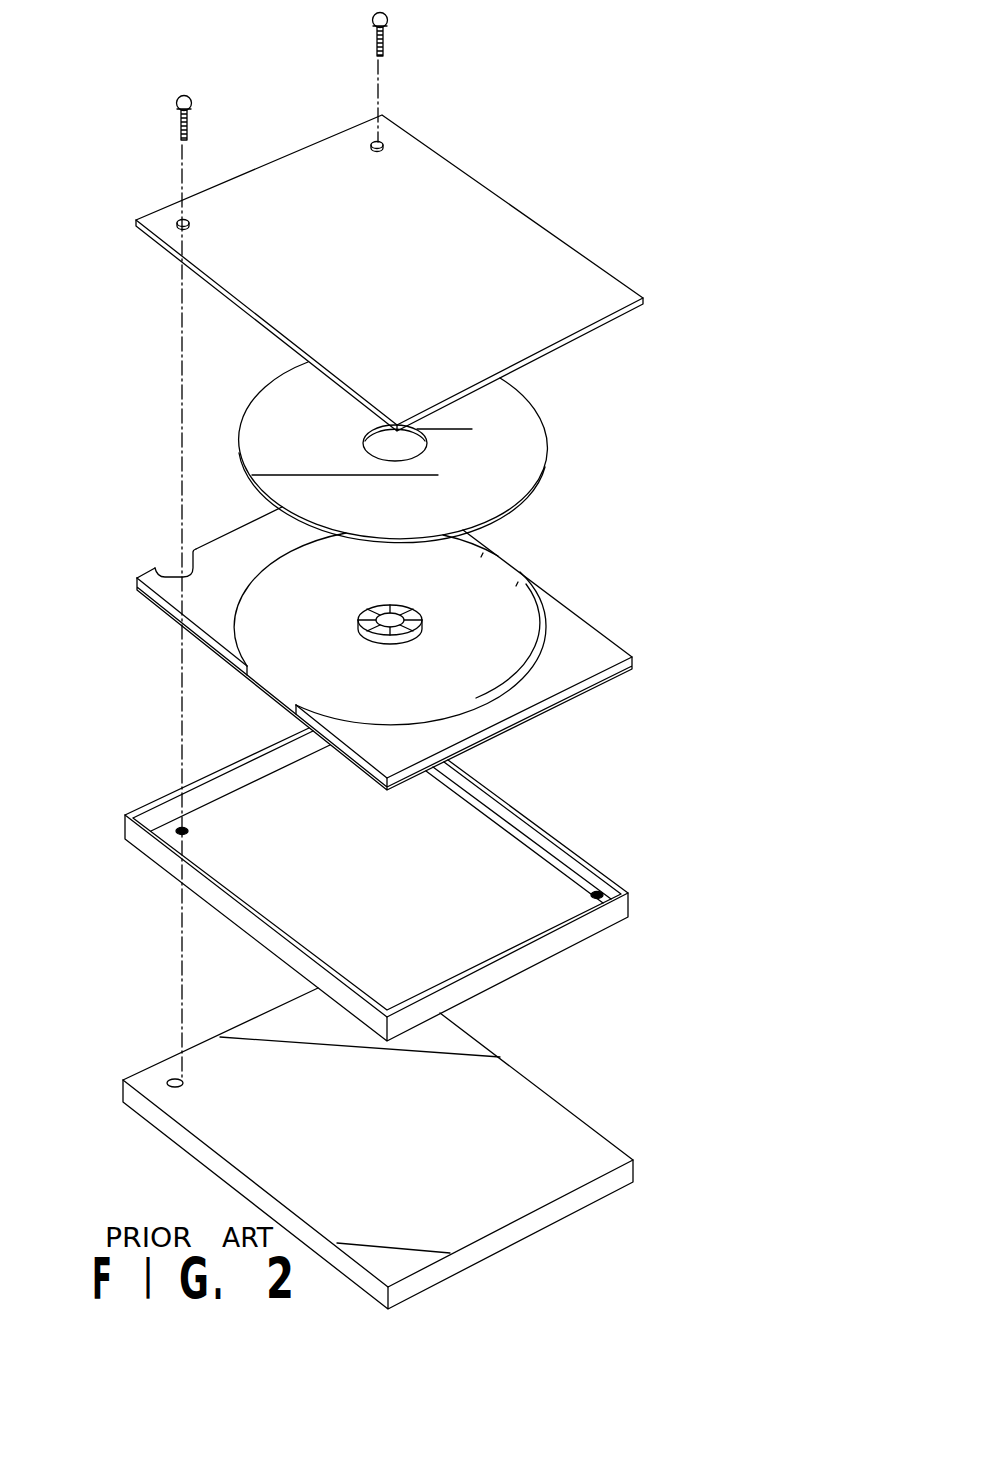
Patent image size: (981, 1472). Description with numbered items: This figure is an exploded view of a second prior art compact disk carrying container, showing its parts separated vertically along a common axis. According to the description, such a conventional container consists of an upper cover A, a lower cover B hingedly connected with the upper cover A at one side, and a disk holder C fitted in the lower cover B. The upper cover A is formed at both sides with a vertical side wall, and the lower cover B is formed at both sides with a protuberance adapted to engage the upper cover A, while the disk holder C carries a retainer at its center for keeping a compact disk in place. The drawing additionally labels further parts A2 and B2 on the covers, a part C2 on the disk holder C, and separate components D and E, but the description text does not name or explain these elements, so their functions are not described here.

The upper cover A is at (482, 208).
The screw holes A2 is at (177, 226).
The lower cover B is at (577, 922).
The hole in lower case B2 is at (578, 887).
The disk holder C is at (575, 628).
The notch in disc holding plate C2 is at (163, 622).
The optical disc D is at (533, 429).
The screws E is at (188, 122).